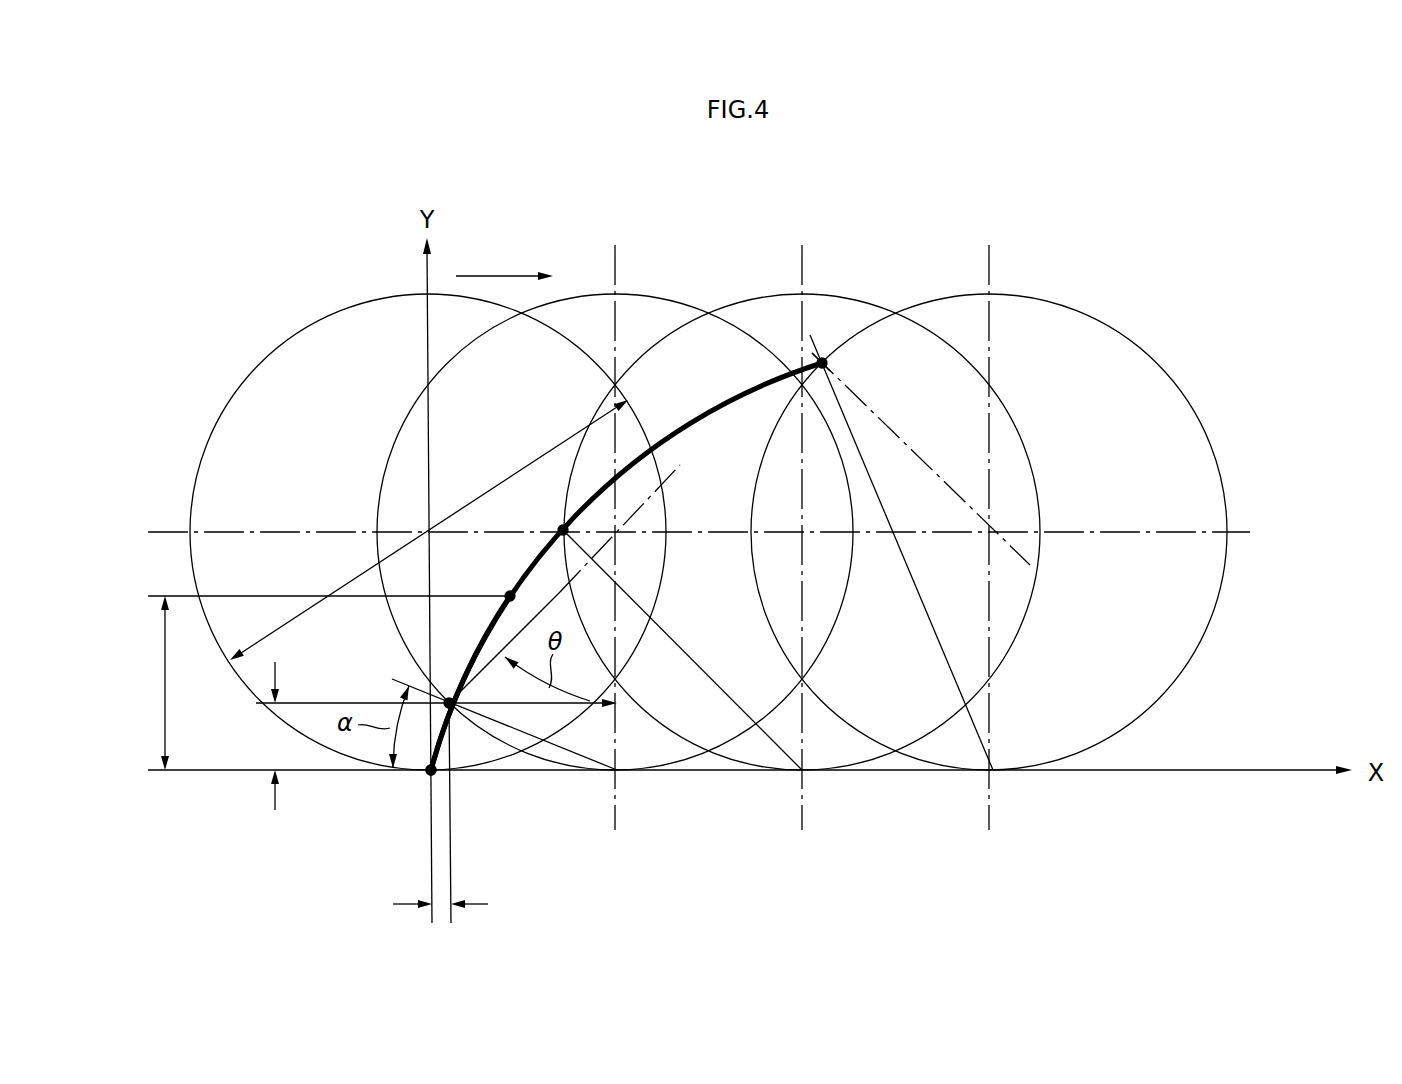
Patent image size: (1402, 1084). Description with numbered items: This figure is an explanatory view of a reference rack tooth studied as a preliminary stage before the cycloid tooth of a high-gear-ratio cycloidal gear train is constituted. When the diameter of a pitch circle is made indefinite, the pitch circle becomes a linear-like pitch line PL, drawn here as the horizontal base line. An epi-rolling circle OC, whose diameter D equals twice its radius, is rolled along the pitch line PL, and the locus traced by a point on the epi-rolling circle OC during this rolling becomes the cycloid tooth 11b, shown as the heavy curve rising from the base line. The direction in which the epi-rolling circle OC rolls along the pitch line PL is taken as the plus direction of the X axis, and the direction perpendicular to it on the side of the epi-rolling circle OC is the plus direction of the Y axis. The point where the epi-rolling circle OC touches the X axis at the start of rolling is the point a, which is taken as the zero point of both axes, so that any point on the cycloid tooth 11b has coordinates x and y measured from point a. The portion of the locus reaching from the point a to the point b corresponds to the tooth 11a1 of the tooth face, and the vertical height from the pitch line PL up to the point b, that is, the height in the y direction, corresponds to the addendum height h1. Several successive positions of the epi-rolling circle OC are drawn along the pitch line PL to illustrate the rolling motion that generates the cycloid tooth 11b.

The cycloid tooth 11b is at (707, 417).
The tooth of the tooth face 11a1 is at (478, 650).
The epi-rolling circle OC is at (265, 355).
The pitch line PL is at (1296, 762).
The point a is at (428, 775).
The point b is at (506, 595).
The addendum height h1 is at (163, 677).
The x coordinate x is at (440, 908).
The y coordinate y is at (273, 740).
The diameter of the epi-rolling circle D is at (492, 490).